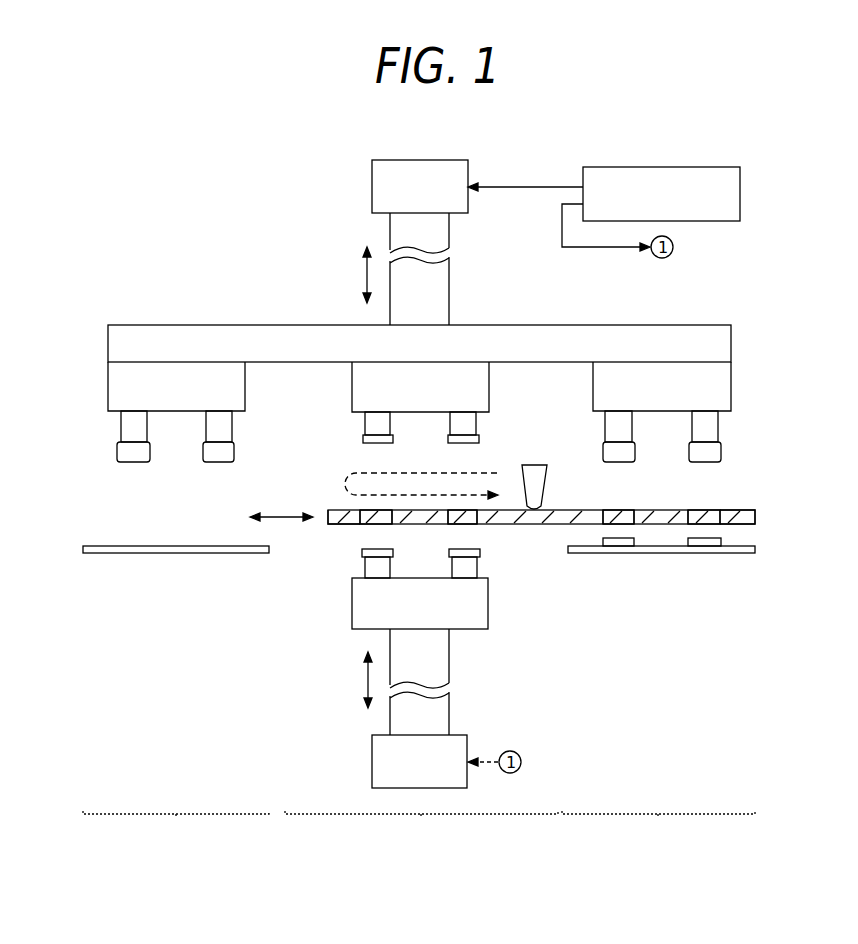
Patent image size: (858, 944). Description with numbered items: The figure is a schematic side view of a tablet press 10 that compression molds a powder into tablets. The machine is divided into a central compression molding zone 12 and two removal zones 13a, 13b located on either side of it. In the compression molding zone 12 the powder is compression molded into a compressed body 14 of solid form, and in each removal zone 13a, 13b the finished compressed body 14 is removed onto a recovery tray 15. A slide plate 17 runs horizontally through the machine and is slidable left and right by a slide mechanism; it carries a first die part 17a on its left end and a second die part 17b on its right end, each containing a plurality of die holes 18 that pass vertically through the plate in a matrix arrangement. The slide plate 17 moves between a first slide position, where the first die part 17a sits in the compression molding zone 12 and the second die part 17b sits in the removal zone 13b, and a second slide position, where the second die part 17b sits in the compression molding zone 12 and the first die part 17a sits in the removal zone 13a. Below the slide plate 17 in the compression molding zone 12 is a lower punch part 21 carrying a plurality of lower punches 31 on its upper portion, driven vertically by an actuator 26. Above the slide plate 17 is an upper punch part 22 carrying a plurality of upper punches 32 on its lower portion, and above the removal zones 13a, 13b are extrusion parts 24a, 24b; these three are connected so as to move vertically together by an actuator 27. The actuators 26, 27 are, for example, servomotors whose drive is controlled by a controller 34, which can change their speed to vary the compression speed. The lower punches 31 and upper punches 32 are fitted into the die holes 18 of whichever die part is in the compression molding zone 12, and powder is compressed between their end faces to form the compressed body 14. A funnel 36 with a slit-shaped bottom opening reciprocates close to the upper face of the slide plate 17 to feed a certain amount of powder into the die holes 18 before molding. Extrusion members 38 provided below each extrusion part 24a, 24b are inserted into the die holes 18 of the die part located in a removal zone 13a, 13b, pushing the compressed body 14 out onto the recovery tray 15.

The tablet press 10 is at (785, 186).
The compression molding zone 12 is at (421, 830).
The removal zone 13a is at (176, 830).
The removal zone 13b is at (658, 830).
The compressed body 14 is at (600, 553).
The recovery tray 15 is at (250, 553).
The slide plate 17 is at (770, 517).
The first die part 17a is at (332, 528).
The second die part 17b is at (745, 527).
The die hole 18 is at (396, 526).
The lower punch part 21 is at (490, 633).
The upper punch part 22 is at (493, 382).
The extrusion part 24a is at (104, 385).
The extrusion part 24b is at (735, 385).
The actuator 26 is at (468, 742).
The actuator 27 is at (372, 187).
The lower punch 31 is at (360, 555).
The upper punch 32 is at (363, 438).
The controller 34 is at (660, 167).
The funnel 36 is at (547, 470).
The extrusion member 38 is at (150, 455).